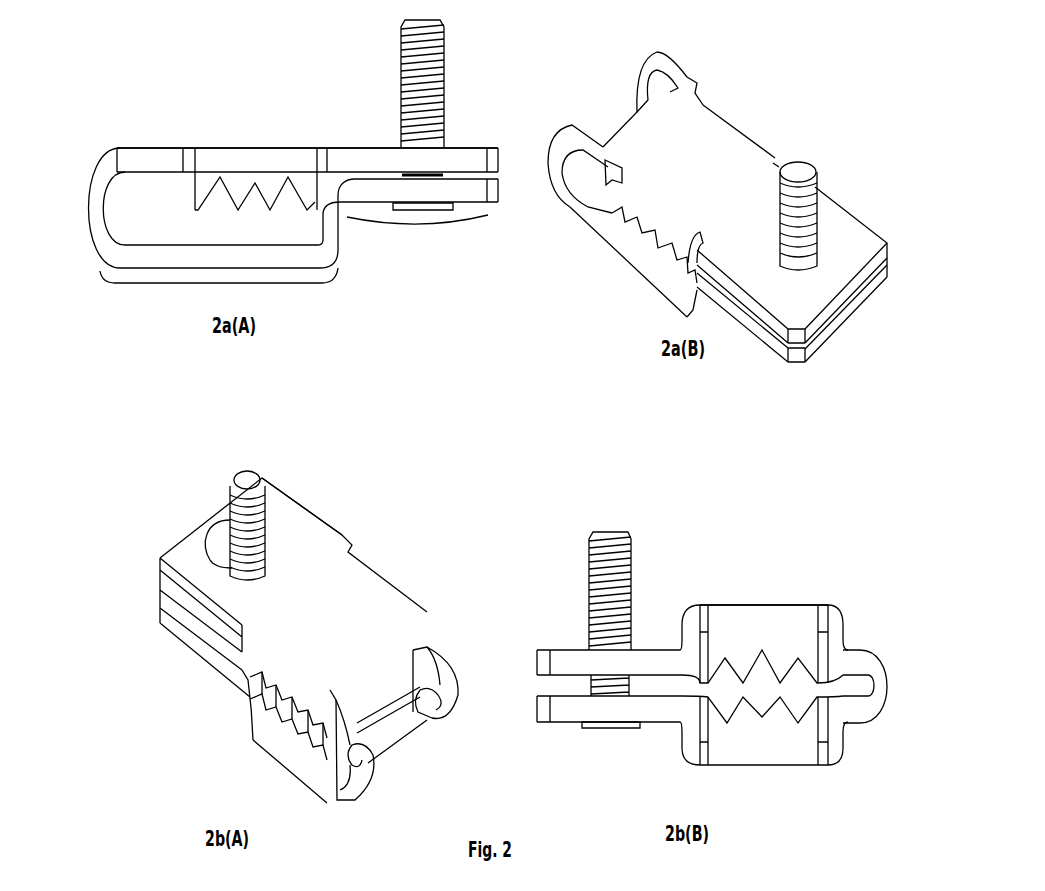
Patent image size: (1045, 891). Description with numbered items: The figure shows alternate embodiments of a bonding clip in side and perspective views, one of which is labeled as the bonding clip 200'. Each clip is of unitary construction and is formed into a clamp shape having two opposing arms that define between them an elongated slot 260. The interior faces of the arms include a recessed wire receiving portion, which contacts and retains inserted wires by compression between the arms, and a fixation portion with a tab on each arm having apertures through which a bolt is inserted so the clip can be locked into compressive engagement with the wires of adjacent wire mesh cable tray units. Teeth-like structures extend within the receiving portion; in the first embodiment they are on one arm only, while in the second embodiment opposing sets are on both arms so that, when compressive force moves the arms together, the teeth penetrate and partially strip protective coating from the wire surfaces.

The alternative clamp connector assembly 200' is at (358, 506).
The elongated slot 260 is at (125, 200).